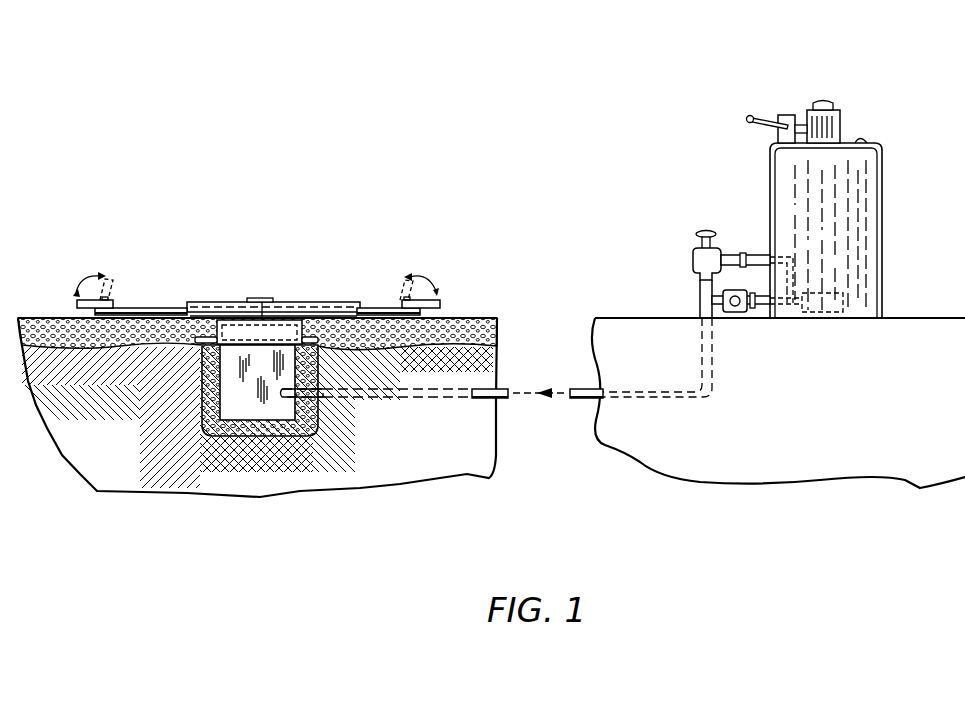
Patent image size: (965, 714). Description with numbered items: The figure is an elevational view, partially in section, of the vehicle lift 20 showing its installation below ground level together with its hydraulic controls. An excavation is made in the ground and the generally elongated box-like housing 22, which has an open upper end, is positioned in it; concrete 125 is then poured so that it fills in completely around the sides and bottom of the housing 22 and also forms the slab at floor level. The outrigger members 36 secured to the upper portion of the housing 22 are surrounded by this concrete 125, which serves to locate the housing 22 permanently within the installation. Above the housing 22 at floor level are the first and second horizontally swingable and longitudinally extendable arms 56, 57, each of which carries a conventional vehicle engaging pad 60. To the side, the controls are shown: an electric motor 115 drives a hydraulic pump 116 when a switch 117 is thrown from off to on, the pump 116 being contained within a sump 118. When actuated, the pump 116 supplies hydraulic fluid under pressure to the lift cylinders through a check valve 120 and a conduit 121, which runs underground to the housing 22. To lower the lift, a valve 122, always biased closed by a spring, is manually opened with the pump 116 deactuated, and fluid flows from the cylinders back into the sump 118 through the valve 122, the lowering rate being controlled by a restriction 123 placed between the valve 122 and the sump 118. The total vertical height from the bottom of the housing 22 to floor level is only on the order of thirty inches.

The vehicle lift 20 is at (179, 272).
The box-like housing 22 is at (268, 408).
The outrigger members 36 is at (215, 320).
The first swingable arm 56 is at (138, 307).
The second swingable arm 57 is at (388, 307).
The vehicle engaging pad 60 is at (77, 302).
The electric motor 115 is at (828, 110).
The hydraulic pump 116 is at (837, 303).
The switch 117 is at (778, 113).
The sump 118 is at (860, 200).
The check valve 120 is at (735, 313).
The conduit 121 is at (627, 400).
The valve 122 is at (692, 255).
The restriction 123 is at (730, 248).
The concrete 125 is at (217, 440).